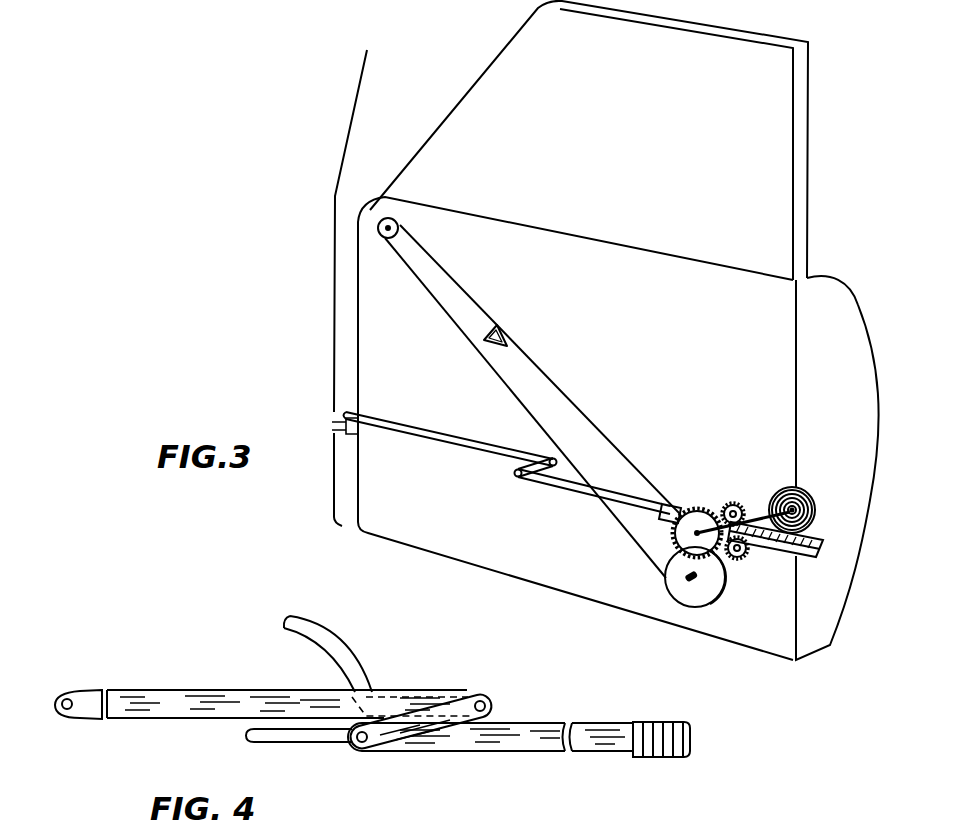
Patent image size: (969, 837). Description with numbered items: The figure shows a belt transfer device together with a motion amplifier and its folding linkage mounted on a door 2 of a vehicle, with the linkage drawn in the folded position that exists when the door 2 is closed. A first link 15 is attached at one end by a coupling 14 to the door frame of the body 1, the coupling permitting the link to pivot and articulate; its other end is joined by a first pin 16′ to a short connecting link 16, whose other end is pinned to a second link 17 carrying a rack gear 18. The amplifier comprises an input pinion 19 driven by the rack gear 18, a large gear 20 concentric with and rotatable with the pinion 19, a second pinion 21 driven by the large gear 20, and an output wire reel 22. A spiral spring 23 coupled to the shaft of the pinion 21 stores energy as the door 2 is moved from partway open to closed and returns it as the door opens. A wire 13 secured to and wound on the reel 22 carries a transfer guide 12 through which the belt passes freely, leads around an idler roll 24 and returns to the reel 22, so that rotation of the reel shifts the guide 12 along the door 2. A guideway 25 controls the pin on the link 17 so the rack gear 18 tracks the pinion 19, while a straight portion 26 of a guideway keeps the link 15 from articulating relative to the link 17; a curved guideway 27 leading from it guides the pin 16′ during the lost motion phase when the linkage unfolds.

In FIG. 3, the body 1 is at (345, 105).
In FIG. 3, the window frame of door 2 is at (778, 157).
In FIG. 3, the transfer guide 12 is at (510, 337).
In FIG. 3, the wire 13 is at (573, 400).
In FIG. 3, the coupling 14 is at (338, 440).
In FIG. 4, the coupling 14 is at (65, 717).
In FIG. 3, the first link 15 is at (440, 447).
In FIG. 4, the first link 15 is at (172, 710).
In FIG. 3, the connecting link 16 is at (535, 474).
In FIG. 4, the connecting link 16 is at (490, 707).
In FIG. 3, the first pin 16′ is at (553, 460).
In FIG. 4, the first pin 16′ is at (483, 697).
In FIG. 3, the second link 17 is at (568, 490).
In FIG. 4, the second link 17 is at (500, 747).
In FIG. 3, the rack gear 18 is at (783, 555).
In FIG. 4, the rack gear 18 is at (655, 757).
In FIG. 3, the input pinion 19 is at (740, 500).
In FIG. 3, the large gear 20 is at (697, 507).
In FIG. 3, the second pinion 21 is at (740, 560).
In FIG. 3, the wire reel 22 is at (685, 600).
In FIG. 3, the spiral spring 23 is at (808, 500).
In FIG. 3, the idler roll 24 is at (383, 237).
In FIG. 4, the guideway 25 is at (292, 737).
In FIG. 4, the straight portion 26 is at (408, 690).
In FIG. 4, the curved guideway 27 is at (333, 650).